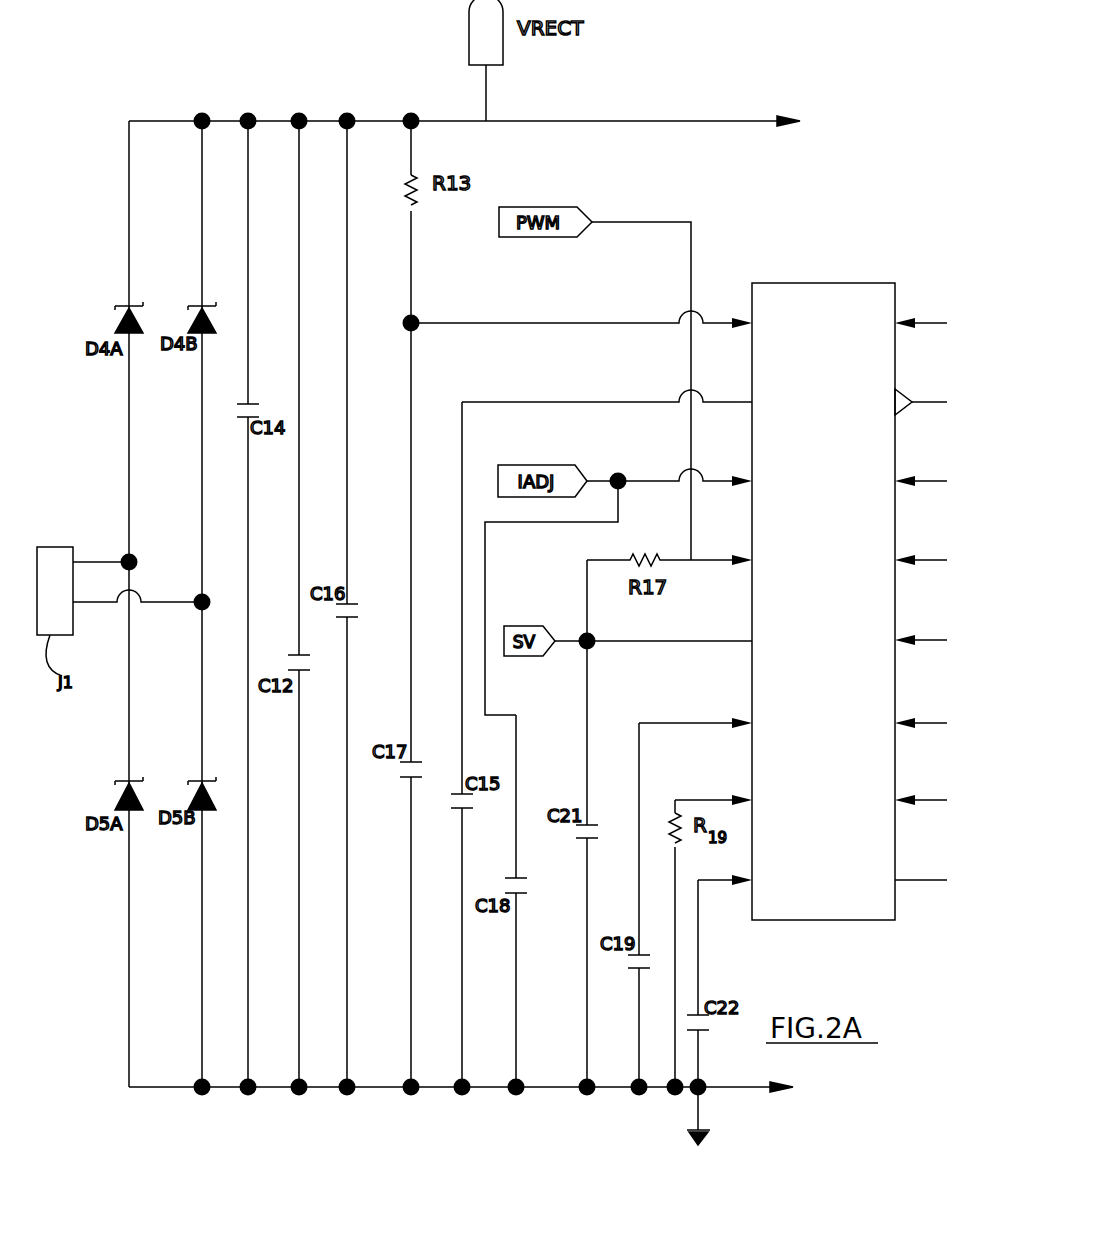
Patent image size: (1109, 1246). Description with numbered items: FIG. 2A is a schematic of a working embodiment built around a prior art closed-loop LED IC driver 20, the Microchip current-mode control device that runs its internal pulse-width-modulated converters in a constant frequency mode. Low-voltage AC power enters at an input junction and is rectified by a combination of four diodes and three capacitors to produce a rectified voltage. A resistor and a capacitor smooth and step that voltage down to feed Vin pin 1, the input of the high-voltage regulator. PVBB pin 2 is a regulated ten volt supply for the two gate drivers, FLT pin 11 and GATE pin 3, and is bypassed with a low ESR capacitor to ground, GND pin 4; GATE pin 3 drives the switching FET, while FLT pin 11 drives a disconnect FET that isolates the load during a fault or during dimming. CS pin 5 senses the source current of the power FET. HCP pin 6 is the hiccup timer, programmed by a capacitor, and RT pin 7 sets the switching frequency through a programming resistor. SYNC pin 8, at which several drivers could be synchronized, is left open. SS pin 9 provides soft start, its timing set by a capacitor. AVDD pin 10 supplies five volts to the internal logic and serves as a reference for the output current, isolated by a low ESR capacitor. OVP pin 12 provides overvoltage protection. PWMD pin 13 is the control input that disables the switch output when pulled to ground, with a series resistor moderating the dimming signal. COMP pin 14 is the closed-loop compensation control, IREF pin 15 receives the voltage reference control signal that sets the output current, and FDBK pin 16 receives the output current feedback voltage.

The LED IC driver 20 is at (850, 922).
The Vin pin 1 is at (754, 316).
The PVBB pin 2 is at (764, 395).
The IREF input pin 15 is at (759, 474).
The PWMD pin 13 is at (770, 553).
The AVDD pin 10 is at (766, 633).
The HCP pin 6 is at (758, 715).
The RT pin 7 is at (749, 793).
The SS pin 9 is at (750, 873).
The OVP pin 12 is at (897, 315).
The GATE pin 3 is at (891, 391).
The CS pin 5 is at (905, 473).
The FLT pin 11 is at (902, 552).
The FDBK pin 16 is at (891, 632).
The SYNC pin 8 is at (890, 714).
The COMP pin 14 is at (888, 793).
The GND pin 4 is at (895, 873).